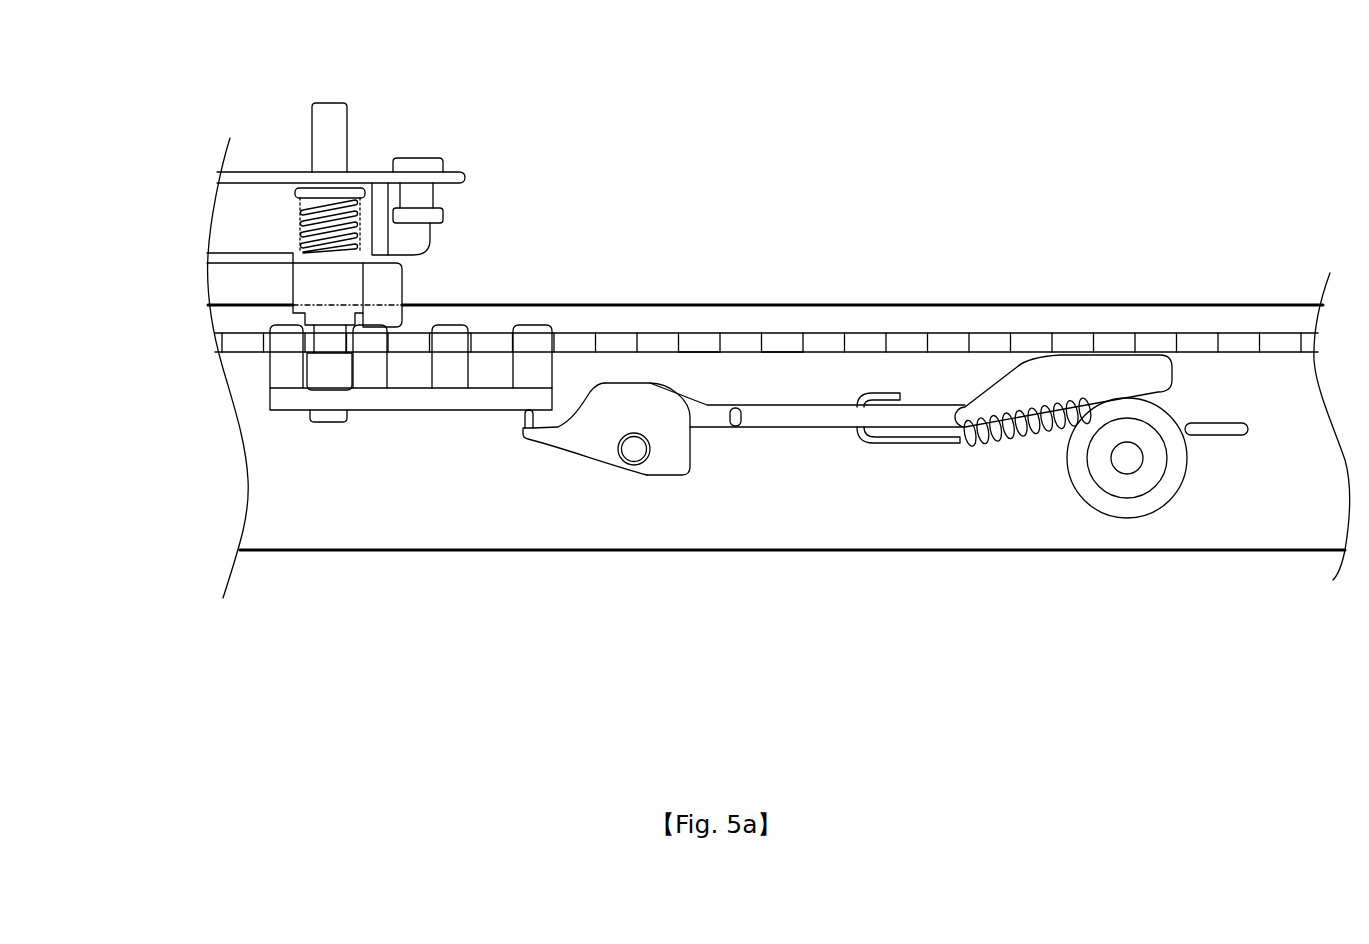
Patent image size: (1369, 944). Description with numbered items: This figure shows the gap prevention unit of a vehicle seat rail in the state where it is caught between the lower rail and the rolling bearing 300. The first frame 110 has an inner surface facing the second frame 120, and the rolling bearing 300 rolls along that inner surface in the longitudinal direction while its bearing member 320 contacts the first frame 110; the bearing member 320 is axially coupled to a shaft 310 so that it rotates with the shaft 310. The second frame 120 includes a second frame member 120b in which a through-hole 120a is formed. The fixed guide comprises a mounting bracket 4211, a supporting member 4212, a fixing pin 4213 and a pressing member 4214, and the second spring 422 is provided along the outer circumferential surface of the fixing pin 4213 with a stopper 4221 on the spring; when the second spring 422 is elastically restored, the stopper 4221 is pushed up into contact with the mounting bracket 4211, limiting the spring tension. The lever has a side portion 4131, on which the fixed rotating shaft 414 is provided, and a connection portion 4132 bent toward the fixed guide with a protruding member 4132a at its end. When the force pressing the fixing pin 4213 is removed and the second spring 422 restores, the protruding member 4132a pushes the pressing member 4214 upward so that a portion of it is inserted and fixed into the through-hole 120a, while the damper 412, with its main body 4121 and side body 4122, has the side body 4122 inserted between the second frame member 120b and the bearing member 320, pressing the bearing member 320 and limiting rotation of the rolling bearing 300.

The first frame 110 is at (973, 553).
The second frame 120 is at (765, 267).
The through-hole 120a is at (667, 222).
The second frame member 120b is at (653, 340).
The rolling bearing 300 is at (1157, 535).
The shaft 310 is at (1123, 462).
The bearing member 320 is at (1177, 466).
The damper 412 is at (1014, 315).
The main body 4121 is at (918, 418).
The side body 4122 is at (1040, 380).
The side portion 4131 is at (677, 463).
The connection portion 4132 is at (560, 445).
The protruding member 4132a is at (526, 416).
The fixed rotating shaft 414 is at (636, 451).
The mounting bracket 4211 is at (258, 178).
The supporting member 4212 is at (395, 287).
The fixing pin 4213 is at (342, 137).
The pressing member 4214 is at (487, 397).
The second spring 422 is at (298, 236).
The stopper 4221 is at (307, 193).